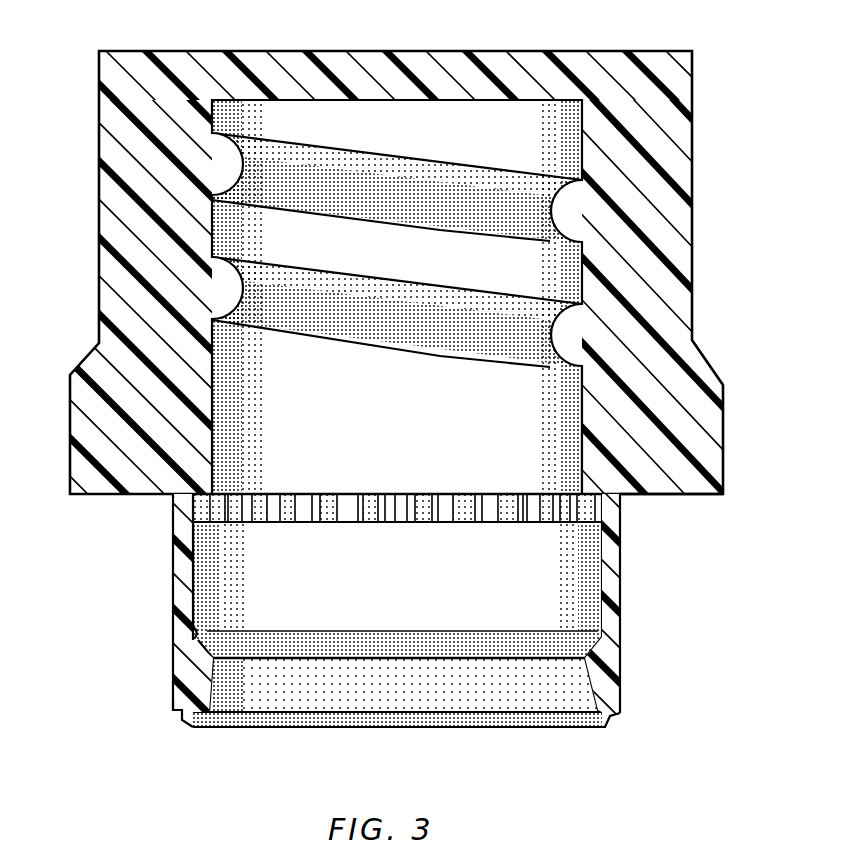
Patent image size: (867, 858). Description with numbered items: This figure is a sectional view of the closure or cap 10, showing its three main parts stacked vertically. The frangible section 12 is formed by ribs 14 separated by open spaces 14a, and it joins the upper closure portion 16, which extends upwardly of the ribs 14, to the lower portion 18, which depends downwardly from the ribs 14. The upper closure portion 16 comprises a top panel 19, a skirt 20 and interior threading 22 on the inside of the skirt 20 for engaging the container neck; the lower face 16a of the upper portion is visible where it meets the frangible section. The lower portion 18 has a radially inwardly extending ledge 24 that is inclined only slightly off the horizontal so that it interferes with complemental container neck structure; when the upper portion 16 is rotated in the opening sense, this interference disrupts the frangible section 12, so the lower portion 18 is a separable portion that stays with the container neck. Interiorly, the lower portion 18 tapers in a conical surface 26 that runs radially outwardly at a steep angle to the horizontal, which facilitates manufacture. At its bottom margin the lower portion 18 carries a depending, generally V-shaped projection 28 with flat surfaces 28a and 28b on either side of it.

The closure or cap 10 is at (568, 44).
The frangible section 12 is at (160, 516).
The ribs 14 is at (418, 523).
The open spaces 14a is at (440, 500).
The upper closure portion 16 is at (99, 187).
The nut end face 16a is at (637, 500).
The lower portion 18 is at (173, 599).
The top panel 19 is at (453, 97).
The skirt 20 is at (203, 407).
The interior threading 22 is at (427, 307).
The radially inwardly extending ledge 24 is at (196, 634).
The conical surface 26 is at (217, 727).
The V-shaped projection 28 is at (190, 728).
The flat surface 28a is at (180, 713).
The flat surface 28b is at (594, 728).